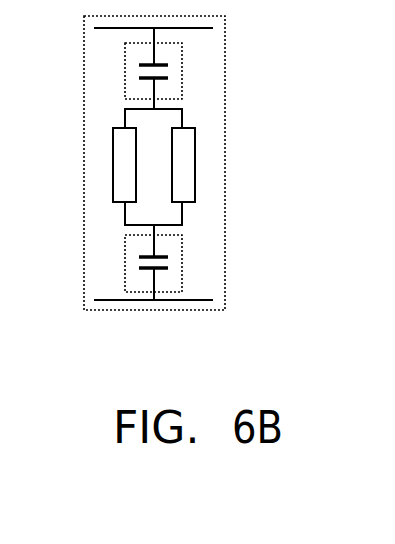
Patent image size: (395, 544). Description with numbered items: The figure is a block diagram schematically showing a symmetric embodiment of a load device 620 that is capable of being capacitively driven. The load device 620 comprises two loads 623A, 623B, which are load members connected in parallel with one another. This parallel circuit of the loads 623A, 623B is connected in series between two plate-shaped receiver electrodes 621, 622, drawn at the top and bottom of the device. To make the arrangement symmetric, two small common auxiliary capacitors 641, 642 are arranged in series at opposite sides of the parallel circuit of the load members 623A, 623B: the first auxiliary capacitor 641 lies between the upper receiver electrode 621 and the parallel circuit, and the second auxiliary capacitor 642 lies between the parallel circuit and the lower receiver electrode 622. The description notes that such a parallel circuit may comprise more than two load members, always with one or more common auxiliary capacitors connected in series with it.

The load device 620 is at (225, 110).
The receiver electrode 621 is at (180, 28).
The receiver electrode 622 is at (203, 300).
The load 623A is at (136, 138).
The load 623B is at (195, 183).
The auxiliary capacitor 641 is at (125, 82).
The auxiliary capacitor 642 is at (125, 271).